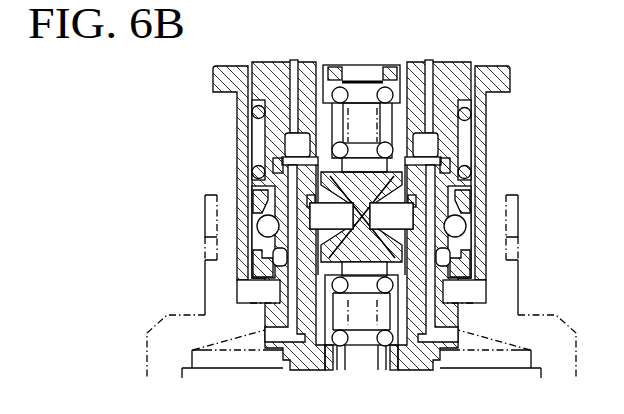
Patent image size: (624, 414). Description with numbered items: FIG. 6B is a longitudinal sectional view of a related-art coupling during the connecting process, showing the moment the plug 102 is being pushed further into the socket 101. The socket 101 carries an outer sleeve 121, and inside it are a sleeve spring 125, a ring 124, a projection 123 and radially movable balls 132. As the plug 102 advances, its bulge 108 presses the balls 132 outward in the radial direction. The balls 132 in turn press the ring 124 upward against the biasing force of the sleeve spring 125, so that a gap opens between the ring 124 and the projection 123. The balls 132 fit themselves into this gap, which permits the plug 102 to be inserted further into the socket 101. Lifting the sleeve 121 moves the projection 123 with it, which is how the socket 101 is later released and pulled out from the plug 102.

The socket 101 is at (452, 50).
The plug 102 is at (464, 364).
The sleeve 121 is at (484, 127).
The projection 123 is at (250, 247).
The ring 124 is at (257, 205).
The sleeve spring 125 is at (256, 112).
The balls 132 is at (472, 218).
The bulge 108 is at (438, 242).